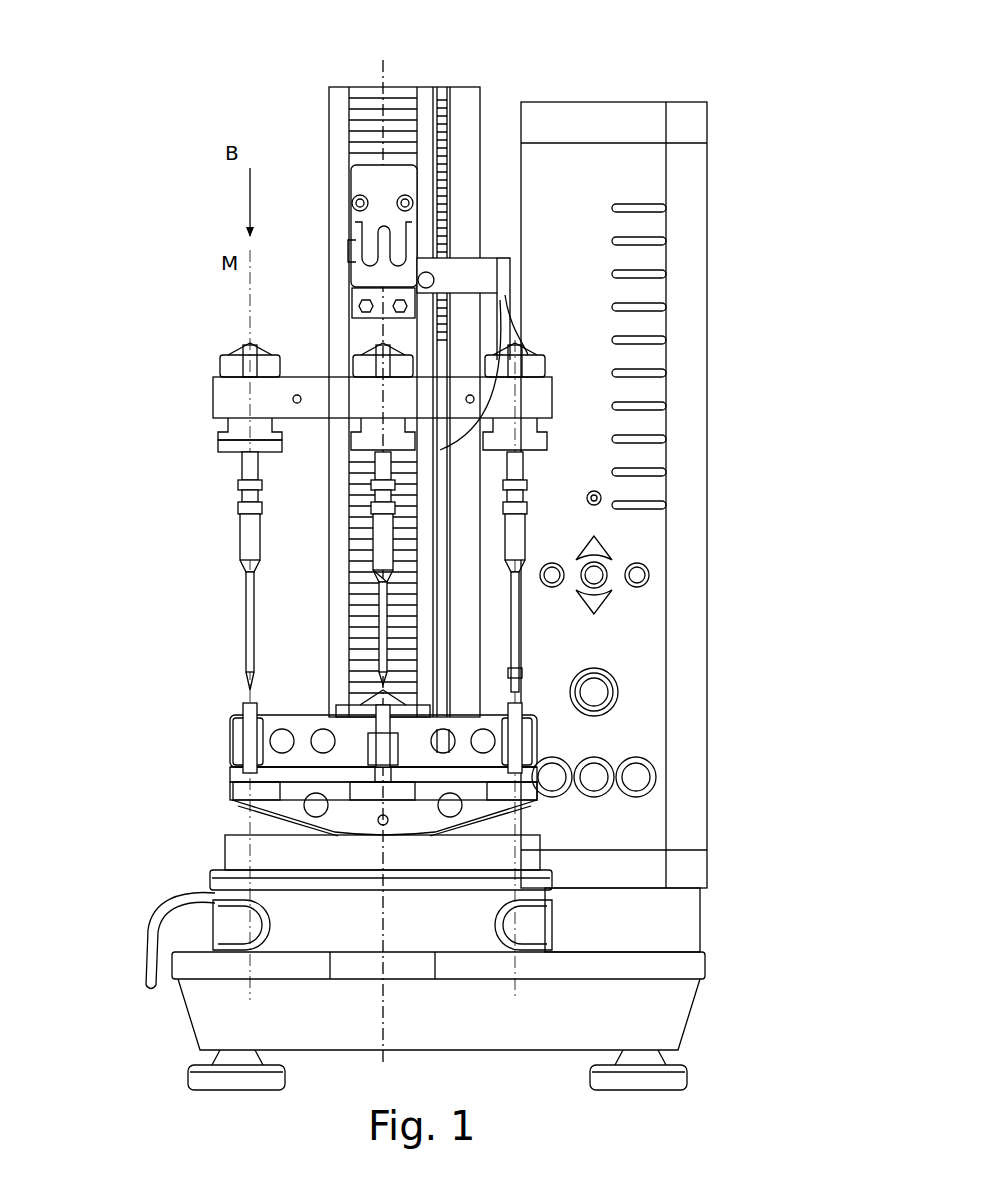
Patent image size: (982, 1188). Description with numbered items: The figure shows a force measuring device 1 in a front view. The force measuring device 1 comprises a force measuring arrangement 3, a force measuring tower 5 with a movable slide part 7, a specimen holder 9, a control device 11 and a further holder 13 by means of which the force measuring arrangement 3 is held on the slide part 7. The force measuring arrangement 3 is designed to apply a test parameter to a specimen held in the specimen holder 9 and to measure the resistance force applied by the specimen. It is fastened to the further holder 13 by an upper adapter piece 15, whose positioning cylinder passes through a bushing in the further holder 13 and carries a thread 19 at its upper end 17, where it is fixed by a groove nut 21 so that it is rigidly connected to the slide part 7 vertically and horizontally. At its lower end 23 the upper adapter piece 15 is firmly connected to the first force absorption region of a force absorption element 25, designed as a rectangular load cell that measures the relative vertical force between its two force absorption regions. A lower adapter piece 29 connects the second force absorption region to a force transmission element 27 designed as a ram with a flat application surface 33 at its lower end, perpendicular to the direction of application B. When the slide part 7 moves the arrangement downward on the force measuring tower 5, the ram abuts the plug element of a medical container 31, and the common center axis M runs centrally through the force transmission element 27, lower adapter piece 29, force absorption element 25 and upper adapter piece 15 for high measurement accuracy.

The force measuring device 1 is at (162, 85).
The force measuring arrangement 3 is at (175, 591).
The force measuring tower 5 is at (462, 134).
The slide part 7 is at (362, 176).
The specimen holder 9 is at (245, 800).
The control device 11 is at (630, 665).
The further holder 13 is at (318, 388).
The upper adapter piece 15 is at (228, 424).
The upper end 17 is at (246, 348).
The thread 19 is at (250, 350).
The groove nut 21 is at (226, 361).
The lower end 23 is at (232, 442).
The force absorption element 25 is at (244, 466).
The force transmission element 27 is at (246, 626).
The lower adapter piece 29 is at (242, 531).
The medical container 31 is at (243, 736).
The application surface 33 is at (250, 690).